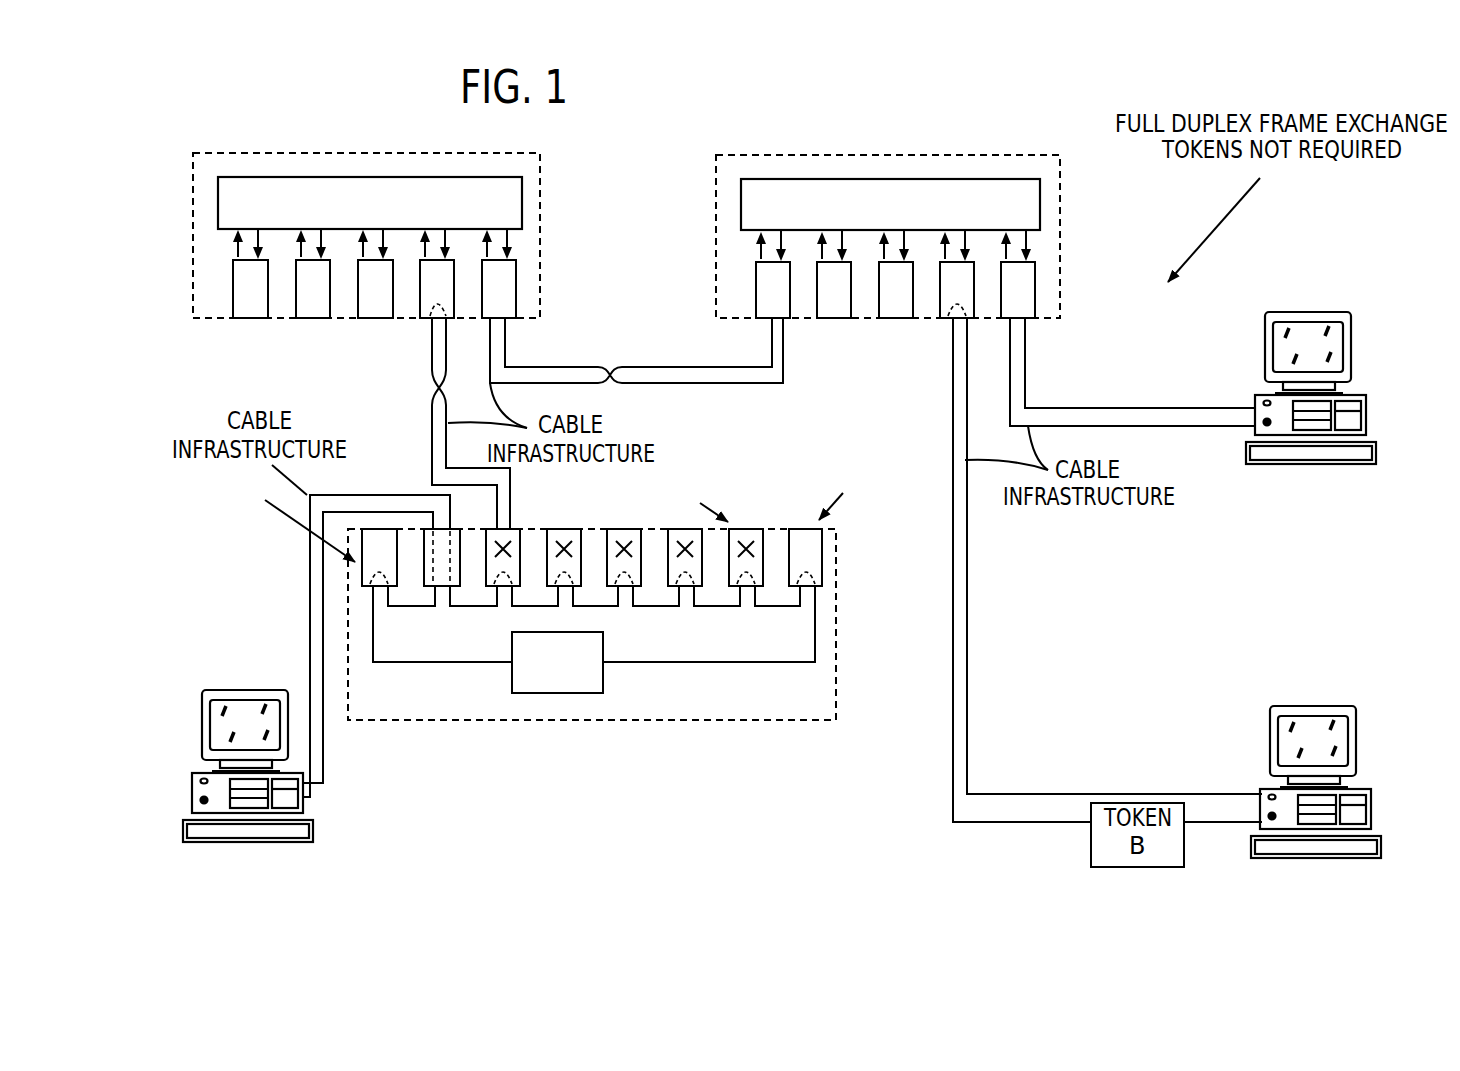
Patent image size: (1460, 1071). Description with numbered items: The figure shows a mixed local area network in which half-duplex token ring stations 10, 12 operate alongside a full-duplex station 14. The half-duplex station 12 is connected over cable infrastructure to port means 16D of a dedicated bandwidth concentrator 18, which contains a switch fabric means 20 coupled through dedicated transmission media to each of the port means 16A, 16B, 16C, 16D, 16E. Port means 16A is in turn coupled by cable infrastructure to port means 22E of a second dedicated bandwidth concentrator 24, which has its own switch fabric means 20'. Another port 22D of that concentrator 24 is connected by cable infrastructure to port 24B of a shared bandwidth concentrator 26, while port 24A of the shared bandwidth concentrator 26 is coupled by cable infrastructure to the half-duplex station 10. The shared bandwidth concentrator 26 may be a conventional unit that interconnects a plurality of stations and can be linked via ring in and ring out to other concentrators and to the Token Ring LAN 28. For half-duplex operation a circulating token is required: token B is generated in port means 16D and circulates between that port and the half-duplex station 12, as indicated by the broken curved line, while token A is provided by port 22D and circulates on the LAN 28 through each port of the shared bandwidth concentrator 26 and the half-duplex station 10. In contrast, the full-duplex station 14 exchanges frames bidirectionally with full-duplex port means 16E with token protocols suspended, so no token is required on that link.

The half-duplex station 10 is at (239, 732).
The half-duplex station 12 is at (1321, 747).
The full-duplex station 14 is at (1311, 359).
The port means 16A is at (765, 312).
The port means 16B is at (840, 305).
The port means 16C is at (893, 310).
The port means 16D is at (937, 305).
The full-duplex port means 16E is at (1033, 303).
The dedicated bandwidth concentrator 18 is at (879, 243).
The switch fabric means 20 is at (926, 196).
The switch fabric means 20' is at (406, 196).
The port 22D is at (418, 300).
The port means 22E is at (513, 302).
The dedicated bandwidth concentrator 24 is at (360, 233).
The port 24A is at (413, 487).
The port 24B is at (519, 505).
The shared bandwidth concentrator 26 is at (535, 654).
The Token Ring LAN 28 is at (463, 687).